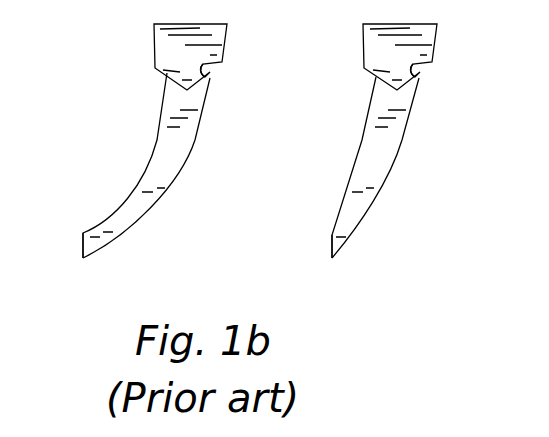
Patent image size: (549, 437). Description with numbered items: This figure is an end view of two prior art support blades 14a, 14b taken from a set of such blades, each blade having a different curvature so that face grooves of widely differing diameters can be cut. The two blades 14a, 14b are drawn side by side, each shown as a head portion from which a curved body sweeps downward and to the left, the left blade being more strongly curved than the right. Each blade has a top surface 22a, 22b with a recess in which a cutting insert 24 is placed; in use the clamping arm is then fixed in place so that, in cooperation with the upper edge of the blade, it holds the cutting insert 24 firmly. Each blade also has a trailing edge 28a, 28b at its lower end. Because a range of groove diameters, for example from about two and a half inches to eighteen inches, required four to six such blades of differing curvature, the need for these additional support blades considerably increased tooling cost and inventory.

The blade 14a is at (167, 190).
The blade 14b is at (378, 190).
The top surface 22a is at (211, 70).
The top surface 22b is at (421, 70).
The cutting insert 24 is at (214, 62).
The trailing edge 28a is at (83, 258).
The trailing edge 28b is at (332, 258).